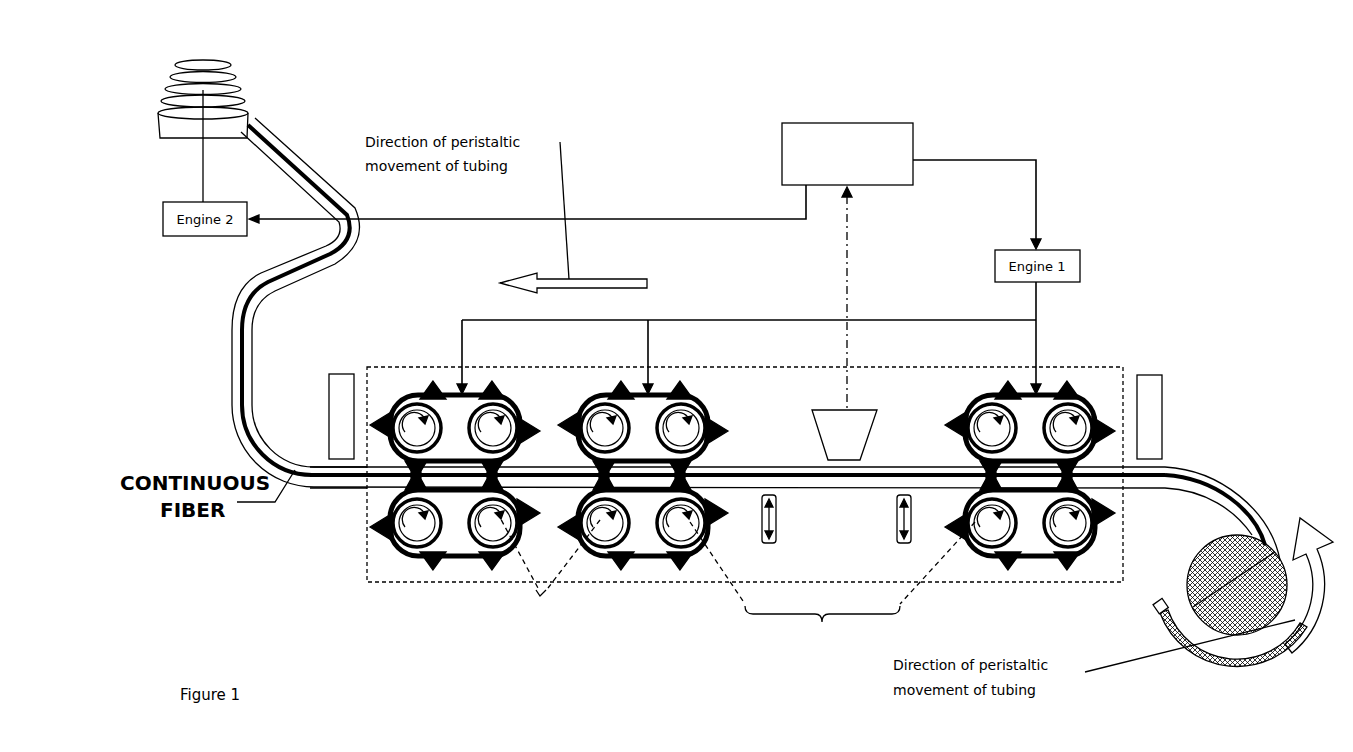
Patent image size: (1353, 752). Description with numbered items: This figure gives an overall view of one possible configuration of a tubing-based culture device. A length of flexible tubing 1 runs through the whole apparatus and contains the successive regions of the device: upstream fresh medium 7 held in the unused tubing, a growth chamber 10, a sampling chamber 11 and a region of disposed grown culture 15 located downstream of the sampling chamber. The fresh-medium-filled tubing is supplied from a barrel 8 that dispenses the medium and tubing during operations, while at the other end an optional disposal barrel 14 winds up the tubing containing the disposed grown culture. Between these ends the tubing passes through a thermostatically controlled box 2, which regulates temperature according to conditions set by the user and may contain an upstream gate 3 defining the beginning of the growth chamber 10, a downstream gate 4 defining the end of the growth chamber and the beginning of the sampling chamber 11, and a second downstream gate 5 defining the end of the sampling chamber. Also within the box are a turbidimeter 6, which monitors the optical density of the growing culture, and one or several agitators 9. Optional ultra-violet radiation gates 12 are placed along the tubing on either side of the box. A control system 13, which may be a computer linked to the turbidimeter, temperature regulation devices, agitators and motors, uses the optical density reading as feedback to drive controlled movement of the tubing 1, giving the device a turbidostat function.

The flexible tubing 1 is at (235, 313).
The thermostatically controlled box 2 is at (1090, 365).
The upstream gate 3 is at (1027, 420).
The downstream gate 4 is at (645, 430).
The second downstream gate 5 is at (450, 408).
The turbidimeter 6 is at (828, 425).
The fresh medium 7 is at (1205, 478).
The barrel 8 is at (1160, 626).
The agitators 9 is at (898, 527).
The growth chamber 10 is at (832, 591).
The sampling chamber 11 is at (548, 570).
The ultra-violet radiation gates 12 is at (340, 372).
The control system 13 is at (915, 125).
The disposal barrel 14 is at (225, 97).
The disposed grown culture 15 is at (352, 484).